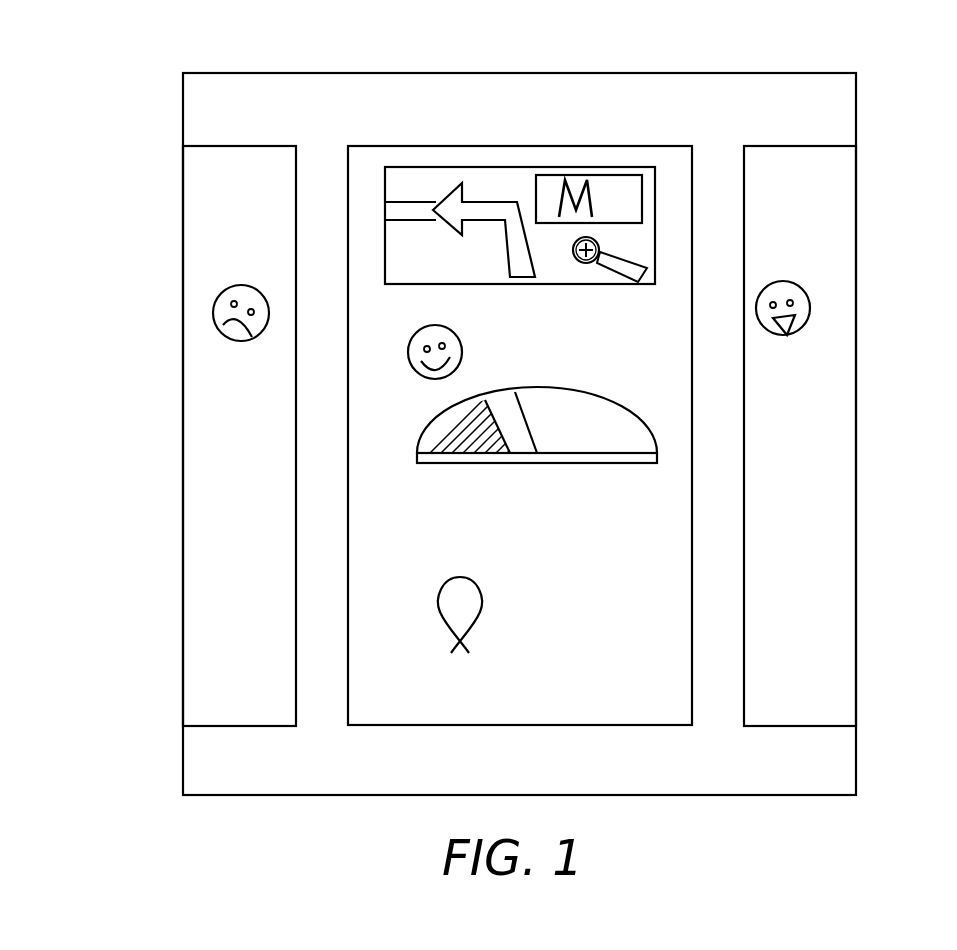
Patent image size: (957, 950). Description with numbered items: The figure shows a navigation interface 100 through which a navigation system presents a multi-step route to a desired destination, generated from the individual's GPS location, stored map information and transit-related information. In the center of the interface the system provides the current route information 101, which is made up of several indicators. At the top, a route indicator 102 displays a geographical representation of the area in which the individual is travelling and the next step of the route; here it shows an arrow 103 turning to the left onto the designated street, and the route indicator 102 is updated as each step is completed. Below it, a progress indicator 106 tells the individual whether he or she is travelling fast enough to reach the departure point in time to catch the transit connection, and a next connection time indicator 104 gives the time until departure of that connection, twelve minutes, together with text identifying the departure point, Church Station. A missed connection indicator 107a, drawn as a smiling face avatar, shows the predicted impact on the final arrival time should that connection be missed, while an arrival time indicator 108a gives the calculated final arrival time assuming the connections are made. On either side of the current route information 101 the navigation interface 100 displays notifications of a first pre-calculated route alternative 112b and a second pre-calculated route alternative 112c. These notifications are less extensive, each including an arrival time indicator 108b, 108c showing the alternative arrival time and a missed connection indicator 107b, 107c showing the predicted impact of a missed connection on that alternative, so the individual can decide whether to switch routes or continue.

The navigation interface 100 is at (183, 73).
The current route information 101 is at (642, 727).
The route indicator 102 is at (553, 167).
The arrow 103 is at (523, 277).
The next connection time indicator 104 is at (542, 513).
The progress indicator 106 is at (583, 395).
The missed connection indicator 107a is at (434, 380).
The missed connection indicator 107b is at (222, 292).
The missed connection indicator 107c is at (803, 288).
The arrival time indicator 108a is at (533, 640).
The arrival time indicator 108b is at (218, 617).
The arrival time indicator 108c is at (818, 620).
The first pre-calculated route alternative 112b is at (218, 146).
The second pre-calculated route alternative 112c is at (837, 147).